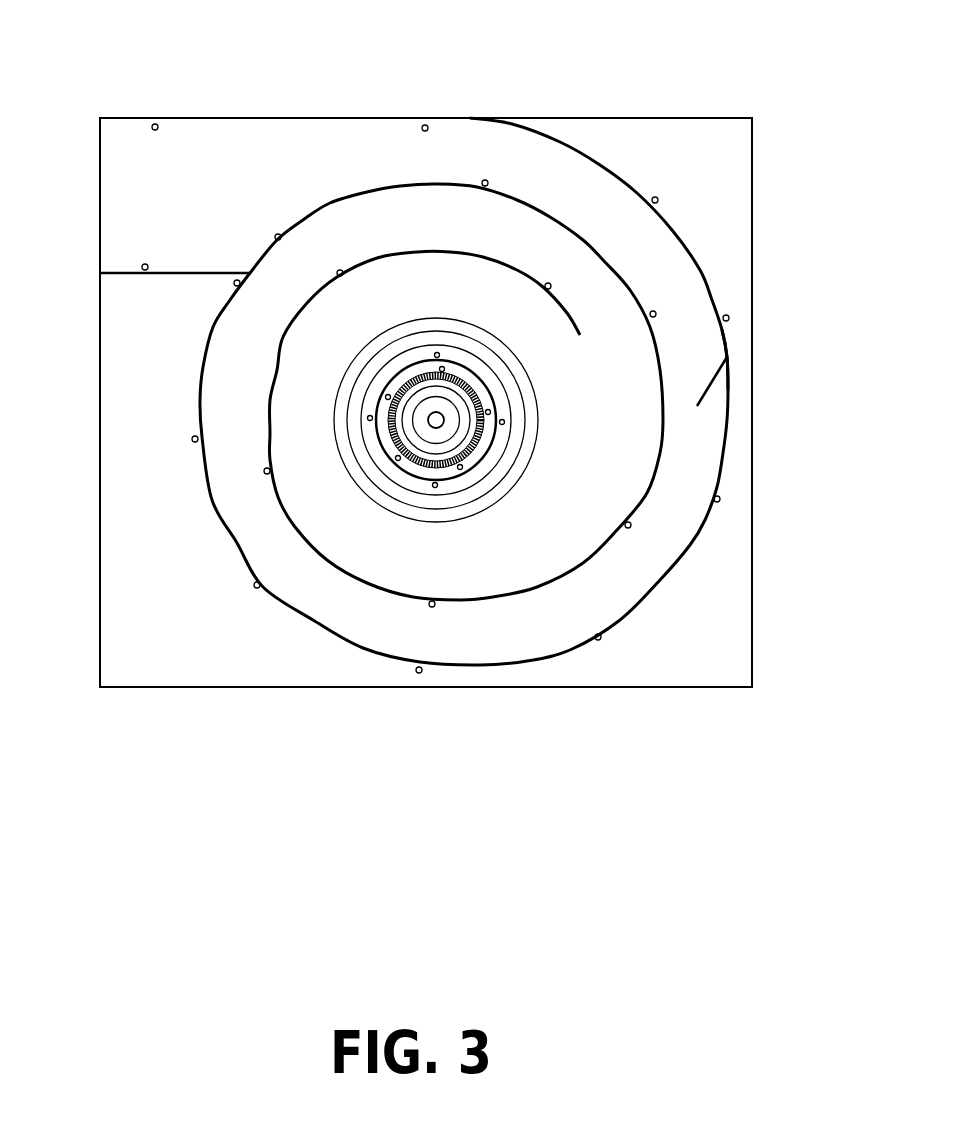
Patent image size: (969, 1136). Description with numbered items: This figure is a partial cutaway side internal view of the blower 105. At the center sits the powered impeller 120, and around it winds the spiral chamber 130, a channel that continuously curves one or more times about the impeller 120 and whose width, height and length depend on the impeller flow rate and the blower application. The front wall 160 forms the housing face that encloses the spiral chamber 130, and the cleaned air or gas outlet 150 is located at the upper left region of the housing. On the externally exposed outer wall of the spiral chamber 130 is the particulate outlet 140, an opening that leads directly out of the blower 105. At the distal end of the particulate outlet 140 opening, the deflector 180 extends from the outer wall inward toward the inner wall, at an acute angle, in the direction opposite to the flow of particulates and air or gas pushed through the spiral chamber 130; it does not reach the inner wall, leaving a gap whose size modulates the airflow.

The blower 105 is at (360, 81).
The powered impeller 120 is at (445, 426).
The spiral chamber 130 is at (473, 230).
The particulate outlet 140 is at (727, 380).
The cleaned air or gas outlet 150 is at (142, 218).
The front wall 160 is at (753, 212).
The deflector 180 is at (697, 406).